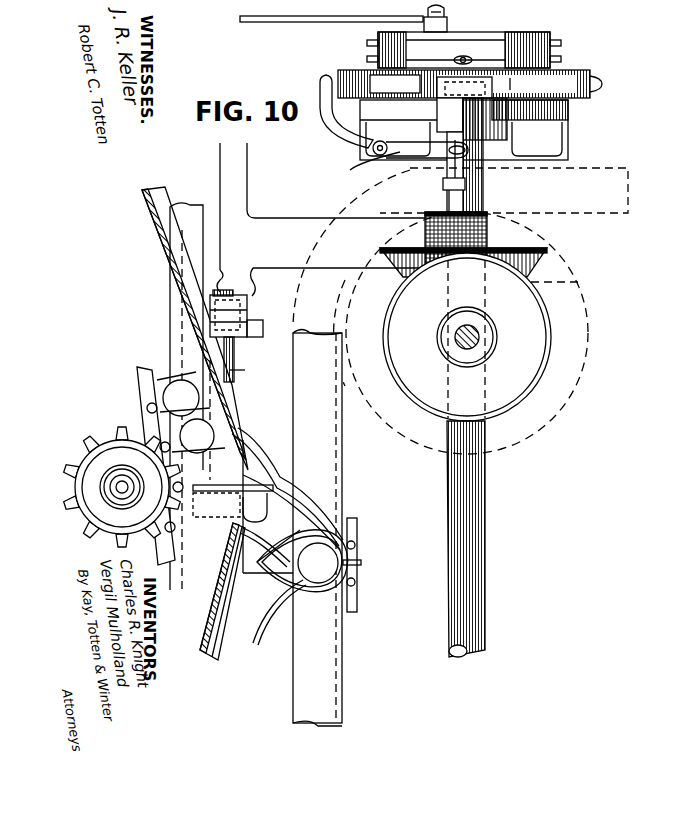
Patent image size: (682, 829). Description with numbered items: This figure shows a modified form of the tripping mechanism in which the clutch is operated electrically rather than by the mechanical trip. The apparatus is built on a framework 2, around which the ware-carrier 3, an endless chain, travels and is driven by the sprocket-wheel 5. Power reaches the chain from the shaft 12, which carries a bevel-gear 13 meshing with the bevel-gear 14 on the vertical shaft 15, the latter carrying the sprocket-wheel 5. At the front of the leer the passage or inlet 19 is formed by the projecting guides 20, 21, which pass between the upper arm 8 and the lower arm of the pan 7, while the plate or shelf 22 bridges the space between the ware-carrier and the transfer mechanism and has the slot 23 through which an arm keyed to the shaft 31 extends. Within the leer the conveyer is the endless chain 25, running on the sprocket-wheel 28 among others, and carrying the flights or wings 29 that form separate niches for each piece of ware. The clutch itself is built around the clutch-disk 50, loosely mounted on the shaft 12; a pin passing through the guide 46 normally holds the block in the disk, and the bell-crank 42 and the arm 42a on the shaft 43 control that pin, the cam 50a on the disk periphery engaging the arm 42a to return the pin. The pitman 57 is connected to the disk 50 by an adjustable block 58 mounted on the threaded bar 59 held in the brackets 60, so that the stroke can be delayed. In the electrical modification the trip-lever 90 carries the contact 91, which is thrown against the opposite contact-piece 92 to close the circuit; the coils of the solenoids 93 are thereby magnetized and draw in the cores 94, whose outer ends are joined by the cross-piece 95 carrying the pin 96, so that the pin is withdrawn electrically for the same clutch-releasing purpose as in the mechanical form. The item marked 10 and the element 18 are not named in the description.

The framework 2 is at (630, 186).
The ware-carrier 3 is at (358, 530).
The sprocket-wheel 5 is at (578, 390).
The pan 7 is at (330, 585).
The upper arm 8 is at (292, 610).
The connecting piece 10 is at (278, 544).
The shaft 12 is at (478, 492).
The bevel-gear 13 is at (530, 265).
The bevel-gear 14 is at (546, 312).
The vertical shaft 15 is at (478, 340).
The inclined bar 18 is at (180, 273).
The passage or inlet 19 is at (285, 522).
The projecting guide 20 is at (282, 518).
The projecting guide 21 is at (280, 565).
The plate or shelf 22 is at (260, 420).
The slot 23 is at (285, 470).
The endless chain 25 is at (148, 406).
The sprocket-wheel 28 is at (105, 508).
The flights or wings 29 is at (170, 372).
The shaft 31 is at (236, 371).
The bell-crank 42 is at (352, 172).
The arm 42a is at (326, 124).
The shaft 43 is at (372, 150).
The guide 46 is at (463, 108).
The clutch-disk 50 is at (572, 82).
The cam 50a is at (604, 84).
The pitman 57 is at (345, 22).
The adjustable block 58 is at (449, 26).
The threaded bar 59 is at (562, 43).
The brackets 60 is at (514, 34).
The trip-lever 90 is at (255, 470).
The contact 91 is at (238, 342).
The contact-piece 92 is at (252, 320).
The solenoids 93 is at (480, 240).
The cores 94 is at (470, 200).
The cross-piece 95 is at (465, 184).
The pin 96 is at (495, 131).